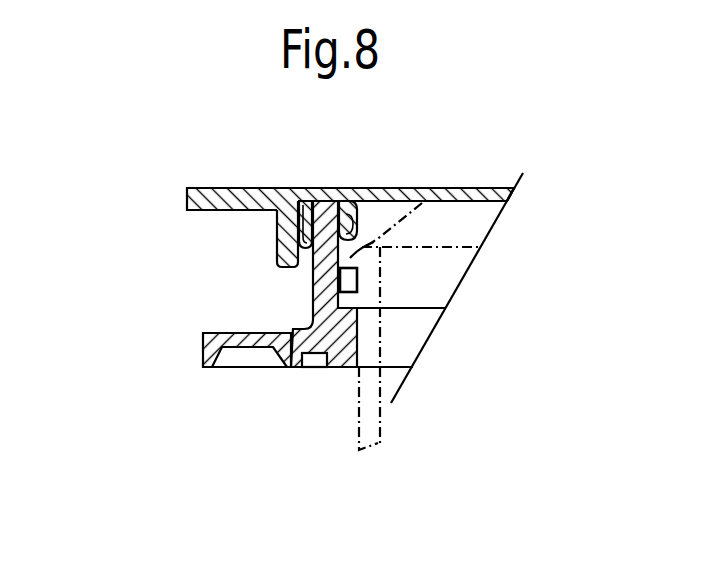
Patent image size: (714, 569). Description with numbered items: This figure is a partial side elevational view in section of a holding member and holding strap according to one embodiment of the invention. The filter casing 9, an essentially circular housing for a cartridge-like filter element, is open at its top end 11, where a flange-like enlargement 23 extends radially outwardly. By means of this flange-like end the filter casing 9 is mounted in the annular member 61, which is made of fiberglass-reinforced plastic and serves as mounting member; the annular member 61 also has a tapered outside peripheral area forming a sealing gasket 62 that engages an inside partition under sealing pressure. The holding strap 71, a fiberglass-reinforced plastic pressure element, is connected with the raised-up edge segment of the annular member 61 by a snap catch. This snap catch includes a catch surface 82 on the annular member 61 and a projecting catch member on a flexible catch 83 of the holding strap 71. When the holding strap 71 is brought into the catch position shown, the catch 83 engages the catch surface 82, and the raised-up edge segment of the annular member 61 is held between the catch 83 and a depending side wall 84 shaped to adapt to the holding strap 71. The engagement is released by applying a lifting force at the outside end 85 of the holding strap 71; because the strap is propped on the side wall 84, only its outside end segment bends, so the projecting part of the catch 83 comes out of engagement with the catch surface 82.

The outside end 85 is at (193, 203).
The flexible catch 83 is at (292, 248).
The catch surface 82 is at (315, 203).
The depending side wall 84 is at (383, 190).
The flange-like enlargement 23 is at (433, 190).
The holding strap 71 is at (490, 189).
The top end 11 is at (440, 247).
The annular member 61 is at (290, 335).
The sealing gasket 62 is at (200, 366).
The filter casing 9 is at (370, 423).